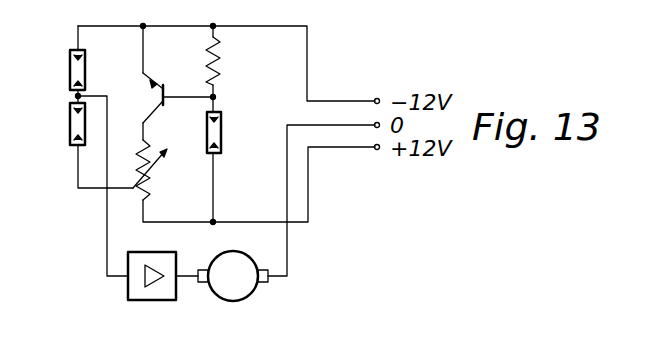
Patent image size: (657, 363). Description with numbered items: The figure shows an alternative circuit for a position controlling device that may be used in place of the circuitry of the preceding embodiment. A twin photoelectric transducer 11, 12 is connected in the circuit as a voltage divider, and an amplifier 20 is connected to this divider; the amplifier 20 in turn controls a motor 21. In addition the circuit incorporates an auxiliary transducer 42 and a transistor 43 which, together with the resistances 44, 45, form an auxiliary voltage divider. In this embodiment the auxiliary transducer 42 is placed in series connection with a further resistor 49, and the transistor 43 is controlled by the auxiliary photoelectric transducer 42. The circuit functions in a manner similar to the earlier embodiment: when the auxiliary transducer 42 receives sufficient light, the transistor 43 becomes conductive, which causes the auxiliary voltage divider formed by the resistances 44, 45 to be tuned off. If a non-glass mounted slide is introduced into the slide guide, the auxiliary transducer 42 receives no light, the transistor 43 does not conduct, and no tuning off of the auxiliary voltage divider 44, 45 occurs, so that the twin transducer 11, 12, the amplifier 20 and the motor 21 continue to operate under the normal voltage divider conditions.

The photoelectric transducer 11 is at (70, 123).
The photoelectric transducer 12 is at (70, 68).
The amplifier 20 is at (153, 300).
The motor 21 is at (233, 301).
The auxiliary transducer 42 is at (221, 134).
The transistor 43 is at (163, 98).
The resistance 44 is at (147, 148).
The resistance 45 is at (158, 186).
The further resistor 49 is at (218, 72).